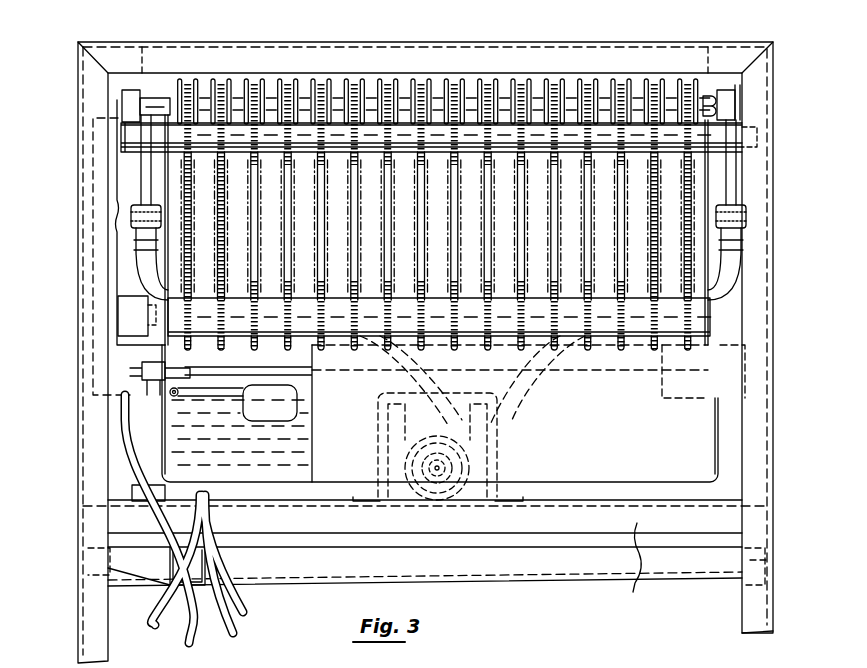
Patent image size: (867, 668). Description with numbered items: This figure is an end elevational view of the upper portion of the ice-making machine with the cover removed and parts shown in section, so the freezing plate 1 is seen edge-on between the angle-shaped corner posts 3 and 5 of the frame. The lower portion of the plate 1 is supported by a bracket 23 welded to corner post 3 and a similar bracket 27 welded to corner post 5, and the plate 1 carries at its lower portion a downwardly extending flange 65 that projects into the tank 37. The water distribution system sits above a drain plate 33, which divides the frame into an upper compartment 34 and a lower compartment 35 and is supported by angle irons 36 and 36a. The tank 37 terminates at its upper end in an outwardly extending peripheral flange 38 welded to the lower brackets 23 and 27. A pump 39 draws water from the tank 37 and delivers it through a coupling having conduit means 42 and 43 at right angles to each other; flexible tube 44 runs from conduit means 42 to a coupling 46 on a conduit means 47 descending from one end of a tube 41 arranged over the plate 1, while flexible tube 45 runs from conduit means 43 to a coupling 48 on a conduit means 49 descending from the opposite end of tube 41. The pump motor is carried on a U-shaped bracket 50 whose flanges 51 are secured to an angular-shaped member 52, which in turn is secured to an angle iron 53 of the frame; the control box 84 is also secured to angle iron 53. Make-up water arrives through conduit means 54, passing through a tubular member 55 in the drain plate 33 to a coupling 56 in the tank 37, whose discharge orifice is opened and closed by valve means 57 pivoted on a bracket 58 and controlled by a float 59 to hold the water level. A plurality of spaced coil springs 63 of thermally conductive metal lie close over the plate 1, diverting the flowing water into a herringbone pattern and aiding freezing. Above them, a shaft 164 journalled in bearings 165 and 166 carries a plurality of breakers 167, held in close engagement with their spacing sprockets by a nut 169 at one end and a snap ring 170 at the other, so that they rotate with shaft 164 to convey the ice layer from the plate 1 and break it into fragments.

The plate 1 is at (335, 232).
The corner post 3 is at (777, 486).
The corner post 5 is at (78, 446).
The bracket 23 is at (729, 403).
The bracket 27 is at (114, 360).
The drain plate 33 is at (512, 579).
The upper compartment 34 is at (112, 485).
The lower compartment 35 is at (120, 592).
The angle iron 36 is at (92, 578).
The angle iron 36a is at (768, 586).
The tank 37 is at (612, 445).
The peripheral flange 38 is at (735, 345).
The pump 39 is at (490, 445).
The tube 41 is at (538, 150).
The conduit means 42 is at (385, 400).
The conduit means 43 is at (492, 400).
The flexible tube 44 is at (140, 268).
The flexible tube 45 is at (735, 278).
The coupling 46 is at (136, 214).
The conduit means 47 is at (140, 178).
The coupling 48 is at (740, 214).
The conduit means 49 is at (735, 182).
The U-shaped bracket 50 is at (500, 418).
The flanges 51 is at (358, 504).
The angular-shaped member 52 is at (648, 563).
The angle iron 53 is at (137, 505).
The conduit means 54 is at (162, 630).
The tubular member 55 is at (208, 560).
The coupling 56 is at (140, 392).
The valve means 57 is at (206, 402).
The bracket 58 is at (240, 432).
The float 59 is at (273, 402).
The coil springs 63 is at (521, 86).
The flange 65 is at (307, 372).
The box 84 is at (110, 288).
The shaft 164 is at (155, 100).
The bearing 165 is at (124, 98).
The bearing 166 is at (741, 100).
The breakers 167 is at (401, 86).
The nut 169 is at (705, 98).
The snap ring 170 is at (178, 100).